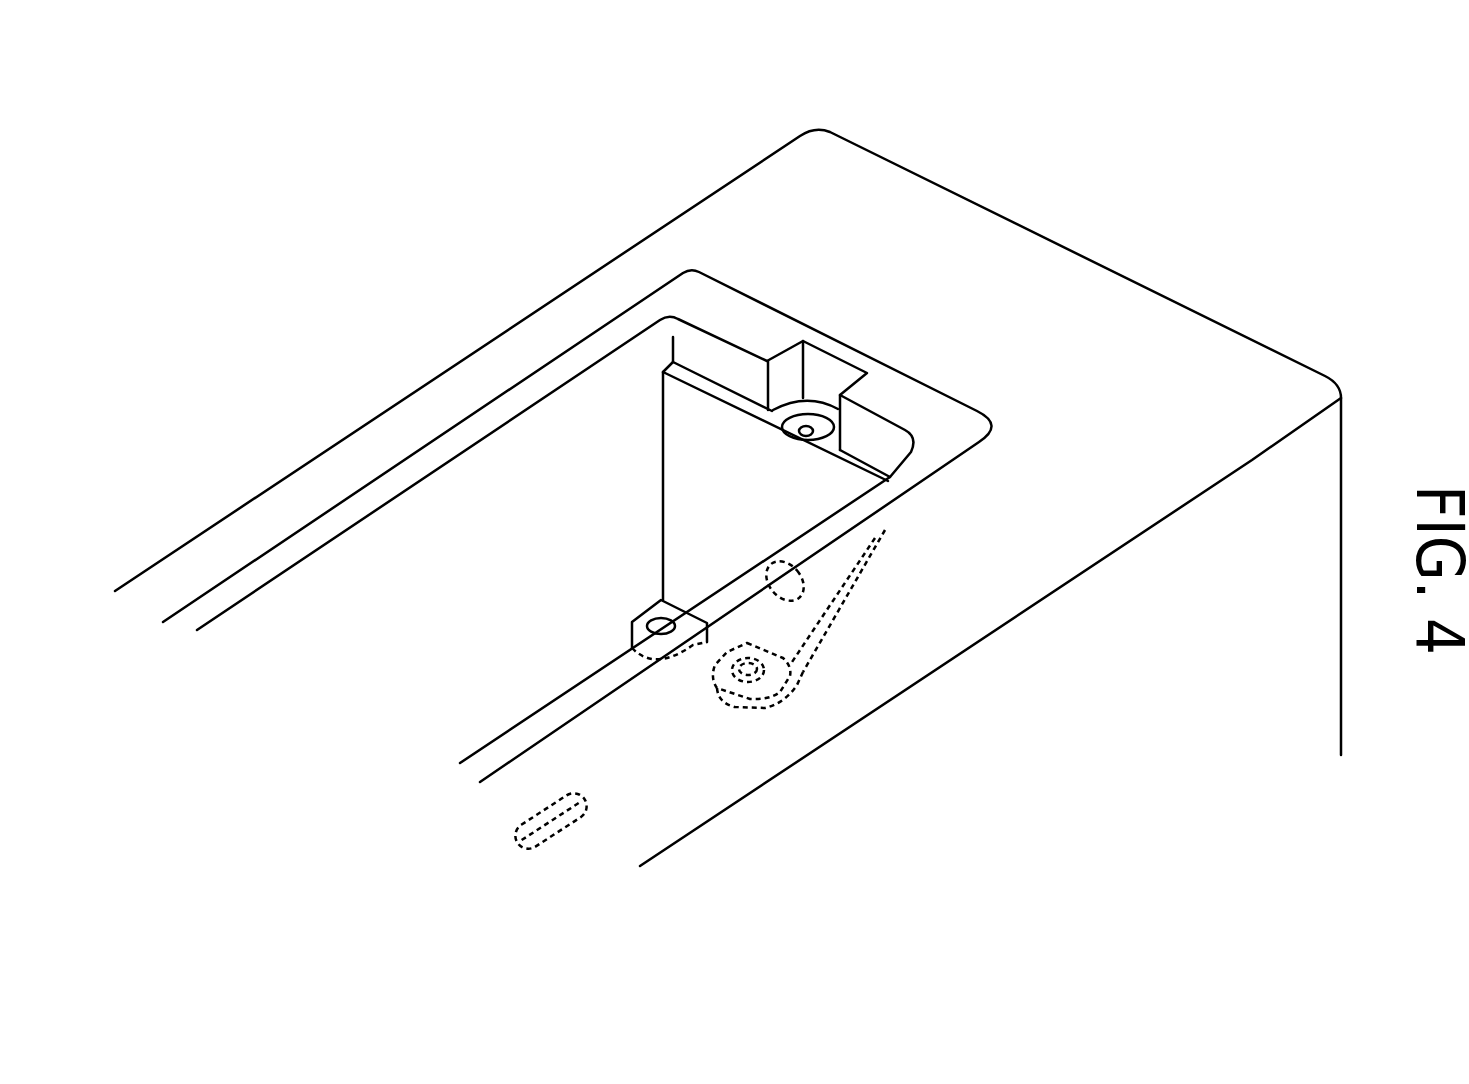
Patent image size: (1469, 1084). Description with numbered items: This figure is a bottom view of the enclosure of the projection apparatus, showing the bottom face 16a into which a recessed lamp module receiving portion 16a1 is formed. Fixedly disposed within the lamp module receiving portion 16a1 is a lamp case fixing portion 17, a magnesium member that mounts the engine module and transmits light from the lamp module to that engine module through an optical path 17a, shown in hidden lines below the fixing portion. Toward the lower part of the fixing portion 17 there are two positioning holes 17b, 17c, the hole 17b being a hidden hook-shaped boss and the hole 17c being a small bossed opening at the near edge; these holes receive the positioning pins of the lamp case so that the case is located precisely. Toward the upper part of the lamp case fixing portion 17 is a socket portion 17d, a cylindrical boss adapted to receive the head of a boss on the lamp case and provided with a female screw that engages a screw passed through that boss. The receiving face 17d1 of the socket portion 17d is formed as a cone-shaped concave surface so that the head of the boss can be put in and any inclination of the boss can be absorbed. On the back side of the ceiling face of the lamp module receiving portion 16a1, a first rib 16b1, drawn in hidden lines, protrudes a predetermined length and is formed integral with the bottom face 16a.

The bottom face 16a is at (1003, 252).
The lamp module receiving portion 16a1 is at (357, 552).
The first rib 16b1 is at (538, 812).
The lamp case fixing portion 17 is at (682, 435).
The optical path 17a is at (767, 578).
The positioning hole 17b is at (749, 706).
The positioning hole 17c is at (638, 620).
The socket portion 17d is at (815, 403).
The receiving face 17d1 is at (828, 424).